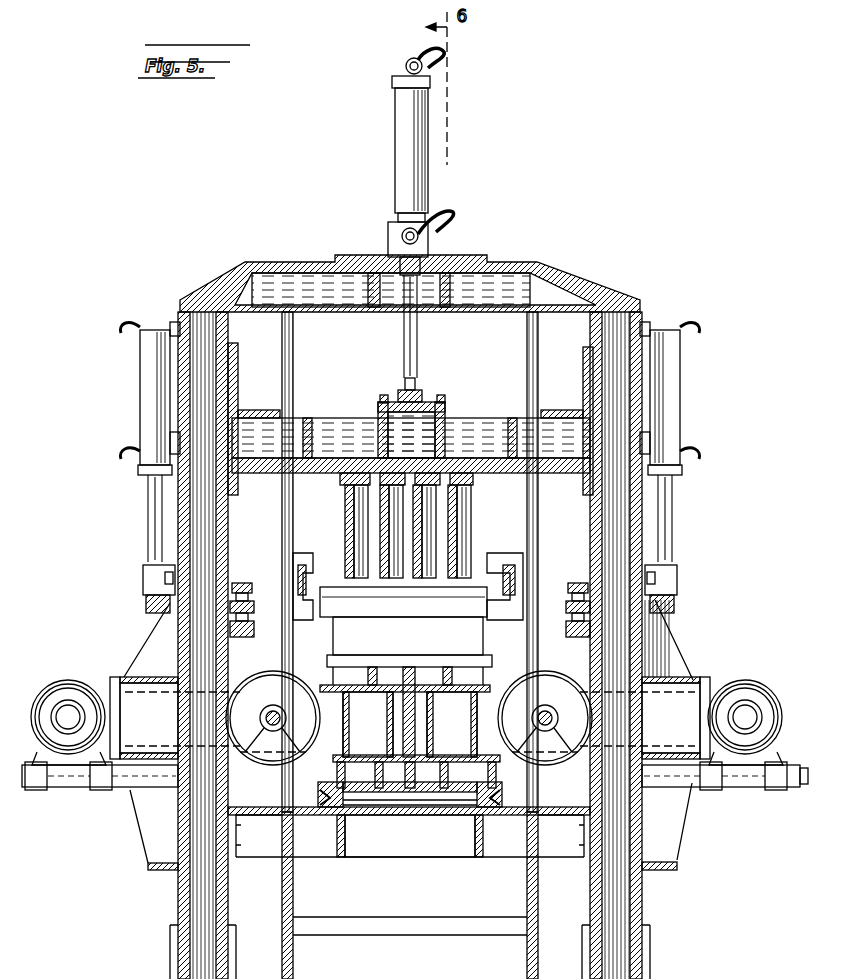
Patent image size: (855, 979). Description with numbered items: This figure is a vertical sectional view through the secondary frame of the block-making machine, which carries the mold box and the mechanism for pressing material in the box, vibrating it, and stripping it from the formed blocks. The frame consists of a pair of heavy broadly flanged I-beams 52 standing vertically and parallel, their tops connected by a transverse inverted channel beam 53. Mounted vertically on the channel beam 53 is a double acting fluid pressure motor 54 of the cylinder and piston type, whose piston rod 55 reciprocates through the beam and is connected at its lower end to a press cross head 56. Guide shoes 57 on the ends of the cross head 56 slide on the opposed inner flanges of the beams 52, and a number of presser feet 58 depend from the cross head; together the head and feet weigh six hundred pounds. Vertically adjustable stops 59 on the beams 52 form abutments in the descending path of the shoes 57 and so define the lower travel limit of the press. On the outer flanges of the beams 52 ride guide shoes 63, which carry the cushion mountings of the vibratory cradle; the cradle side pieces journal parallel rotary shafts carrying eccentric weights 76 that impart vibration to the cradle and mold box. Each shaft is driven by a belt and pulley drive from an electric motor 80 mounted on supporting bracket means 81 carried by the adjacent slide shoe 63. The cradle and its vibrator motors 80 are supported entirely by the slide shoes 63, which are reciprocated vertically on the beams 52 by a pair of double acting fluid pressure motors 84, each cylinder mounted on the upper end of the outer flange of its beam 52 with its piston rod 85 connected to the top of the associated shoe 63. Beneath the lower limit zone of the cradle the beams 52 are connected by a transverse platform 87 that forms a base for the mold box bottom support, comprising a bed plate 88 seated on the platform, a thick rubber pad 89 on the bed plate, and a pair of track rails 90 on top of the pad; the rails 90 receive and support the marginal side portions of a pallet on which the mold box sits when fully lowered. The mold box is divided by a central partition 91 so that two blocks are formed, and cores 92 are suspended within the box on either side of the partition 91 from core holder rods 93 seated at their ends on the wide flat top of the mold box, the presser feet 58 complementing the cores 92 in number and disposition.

The I-beams 52 is at (196, 914).
The transverse inverted channel beam 53 is at (318, 258).
The double acting fluid pressure motor 54 is at (408, 122).
The piston rod 55 is at (402, 362).
The press cross head 56 is at (332, 425).
The guide shoes 57 is at (238, 372).
The presser feet 58 is at (348, 520).
The vertically adjustable stops 59 is at (244, 582).
The guide shoes 63 is at (142, 641).
The eccentric weights 76 is at (263, 748).
The electric motor 80 is at (66, 680).
The supporting bracket means 81 is at (754, 787).
The double acting fluid pressure motors 84 is at (140, 360).
The piston rod 85 is at (150, 510).
The transverse platform 87 is at (312, 820).
The bed plate 88 is at (506, 820).
The thick rubber pad 89 is at (500, 808).
The track rails 90 is at (328, 773).
The central partition 91 is at (410, 680).
The cores 92 is at (410, 724).
The core holder rods 93 is at (377, 683).